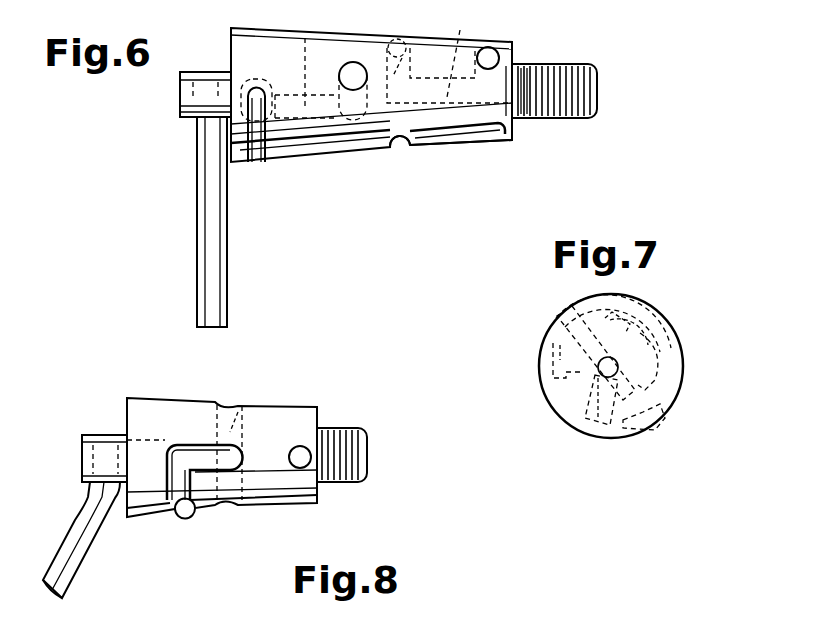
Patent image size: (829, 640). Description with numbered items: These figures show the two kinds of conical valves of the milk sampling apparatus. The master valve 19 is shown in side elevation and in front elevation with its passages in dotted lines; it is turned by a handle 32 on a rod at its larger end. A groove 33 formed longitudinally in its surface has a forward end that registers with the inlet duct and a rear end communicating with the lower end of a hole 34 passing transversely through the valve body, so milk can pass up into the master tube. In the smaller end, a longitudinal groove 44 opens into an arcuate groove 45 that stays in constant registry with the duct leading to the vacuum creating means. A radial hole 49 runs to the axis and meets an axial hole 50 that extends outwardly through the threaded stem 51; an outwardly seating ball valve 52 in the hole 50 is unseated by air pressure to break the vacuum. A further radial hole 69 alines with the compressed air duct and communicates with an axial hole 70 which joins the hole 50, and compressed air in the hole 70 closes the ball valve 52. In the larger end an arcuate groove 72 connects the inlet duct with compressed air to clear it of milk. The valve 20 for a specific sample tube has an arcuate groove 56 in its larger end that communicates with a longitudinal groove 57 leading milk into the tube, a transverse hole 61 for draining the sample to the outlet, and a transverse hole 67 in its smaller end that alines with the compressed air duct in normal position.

In FIG. 6, the master valve 19 is at (233, 48).
In FIG. 8, the valve 20 is at (145, 405).
In FIG. 6, the handle 32 is at (212, 223).
In FIG. 6, the groove 33 is at (305, 38).
In FIG. 7, the groove 33 is at (665, 420).
In FIG. 6, the hole 34 is at (352, 76).
In FIG. 7, the hole 34 is at (562, 318).
In FIG. 6, the groove 44 is at (453, 135).
In FIG. 7, the groove 44 is at (645, 300).
In FIG. 6, the arcuate groove 45 is at (400, 150).
In FIG. 7, the arcuate groove 45 is at (676, 345).
In FIG. 6, the hole 49 is at (487, 60).
In FIG. 7, the hole 49 is at (551, 368).
In FIG. 6, the hole 50 is at (510, 142).
In FIG. 6, the threaded stem 51 is at (566, 66).
In FIG. 6, the ball valve 52 is at (530, 66).
In FIG. 8, the arcuate groove 56 is at (182, 511).
In FIG. 8, the groove 57 is at (205, 460).
In FIG. 8, the transverse hole 61 is at (240, 425).
In FIG. 8, the transverse hole 67 is at (300, 450).
In FIG. 6, the hole 69 is at (401, 45).
In FIG. 7, the hole 69 is at (598, 428).
In FIG. 6, the axial hole 70 is at (462, 50).
In FIG. 6, the arcuate groove 72 is at (257, 160).
In FIG. 7, the arcuate groove 72 is at (665, 318).